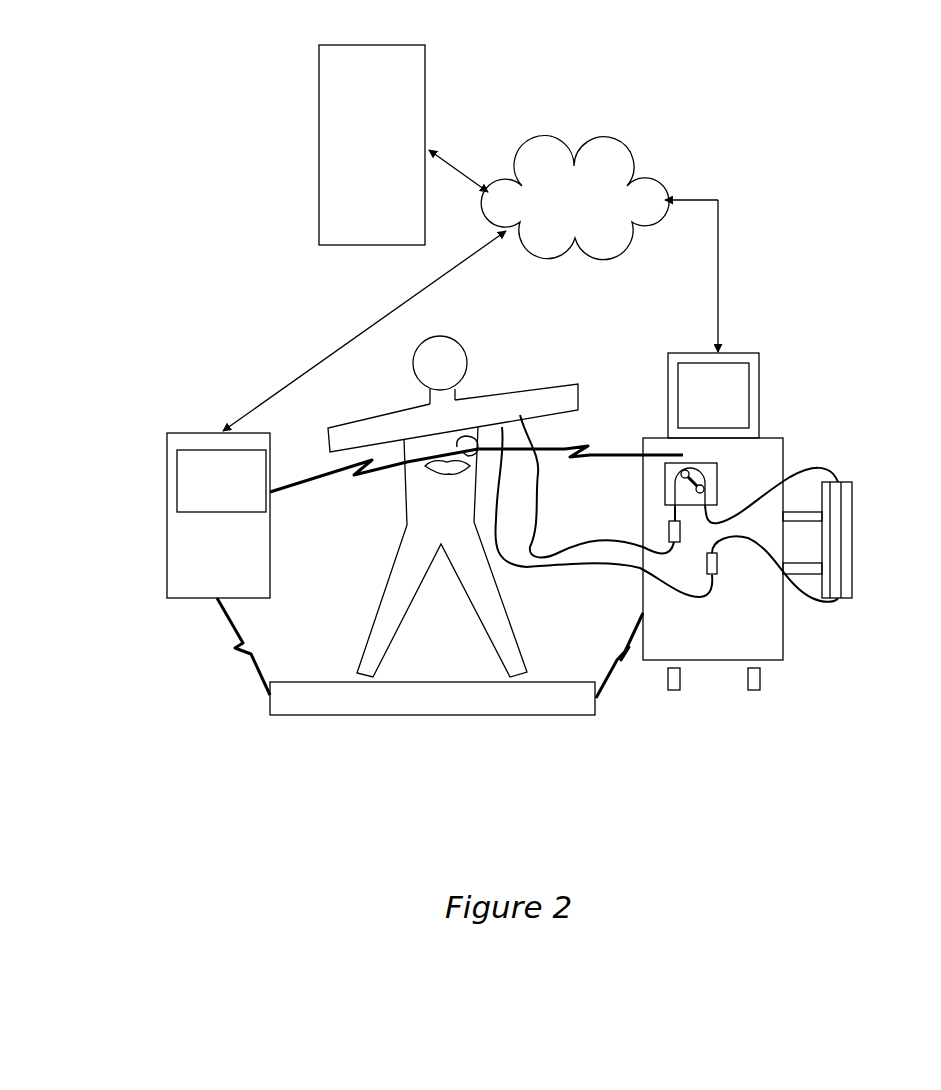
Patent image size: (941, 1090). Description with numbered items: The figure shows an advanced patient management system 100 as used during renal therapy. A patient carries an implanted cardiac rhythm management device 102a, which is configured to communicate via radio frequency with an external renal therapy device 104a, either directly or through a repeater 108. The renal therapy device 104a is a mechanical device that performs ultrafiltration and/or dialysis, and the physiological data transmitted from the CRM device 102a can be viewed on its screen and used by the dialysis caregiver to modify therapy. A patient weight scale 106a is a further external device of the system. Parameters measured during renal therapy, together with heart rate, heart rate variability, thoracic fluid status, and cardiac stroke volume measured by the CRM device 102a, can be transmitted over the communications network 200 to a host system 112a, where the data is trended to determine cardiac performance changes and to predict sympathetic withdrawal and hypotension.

The advanced patient management system 100 is at (790, 81).
The host system 112a is at (429, 80).
The communications network 200 is at (575, 198).
The cardiac rhythm management (CRM) device 102a is at (483, 439).
The repeater 108 is at (165, 511).
The patient weight scale 106a is at (562, 717).
The renal therapy device 104a is at (786, 626).